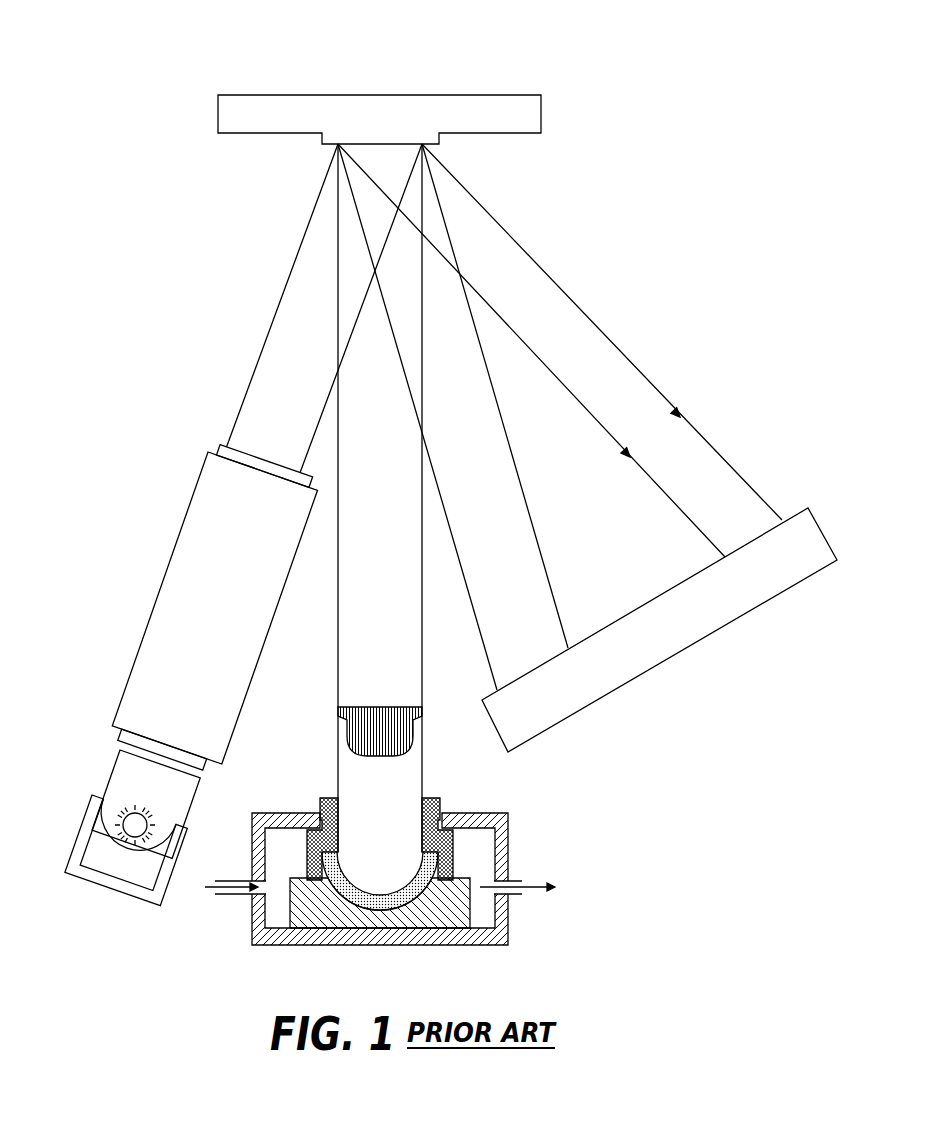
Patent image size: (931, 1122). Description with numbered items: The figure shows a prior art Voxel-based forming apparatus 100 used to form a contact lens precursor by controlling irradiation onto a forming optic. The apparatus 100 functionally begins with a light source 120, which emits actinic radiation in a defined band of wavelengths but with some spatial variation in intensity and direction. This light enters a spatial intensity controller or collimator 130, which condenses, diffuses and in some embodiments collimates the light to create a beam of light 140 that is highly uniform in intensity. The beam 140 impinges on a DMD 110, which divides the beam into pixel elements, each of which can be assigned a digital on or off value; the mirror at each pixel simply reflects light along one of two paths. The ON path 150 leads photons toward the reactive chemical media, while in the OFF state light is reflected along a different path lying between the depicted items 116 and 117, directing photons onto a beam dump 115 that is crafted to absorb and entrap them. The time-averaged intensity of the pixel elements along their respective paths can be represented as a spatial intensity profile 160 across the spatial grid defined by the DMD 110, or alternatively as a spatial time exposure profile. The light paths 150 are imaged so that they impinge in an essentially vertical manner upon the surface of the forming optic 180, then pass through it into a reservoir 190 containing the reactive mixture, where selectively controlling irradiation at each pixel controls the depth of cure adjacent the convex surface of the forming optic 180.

The forming apparatus 100 is at (145, 97).
The DMD 110 is at (388, 116).
The beam dump 115 is at (658, 638).
The OFF path boundary 116 is at (535, 525).
The OFF path boundary 117 is at (625, 357).
The light source 120 is at (108, 797).
The spatial intensity controller 130 is at (198, 598).
The beam of light 140 is at (280, 357).
The ON path 150 is at (362, 607).
The spatial intensity profile 160 is at (382, 735).
The forming optic 180 is at (410, 880).
The reservoir 190 is at (330, 880).